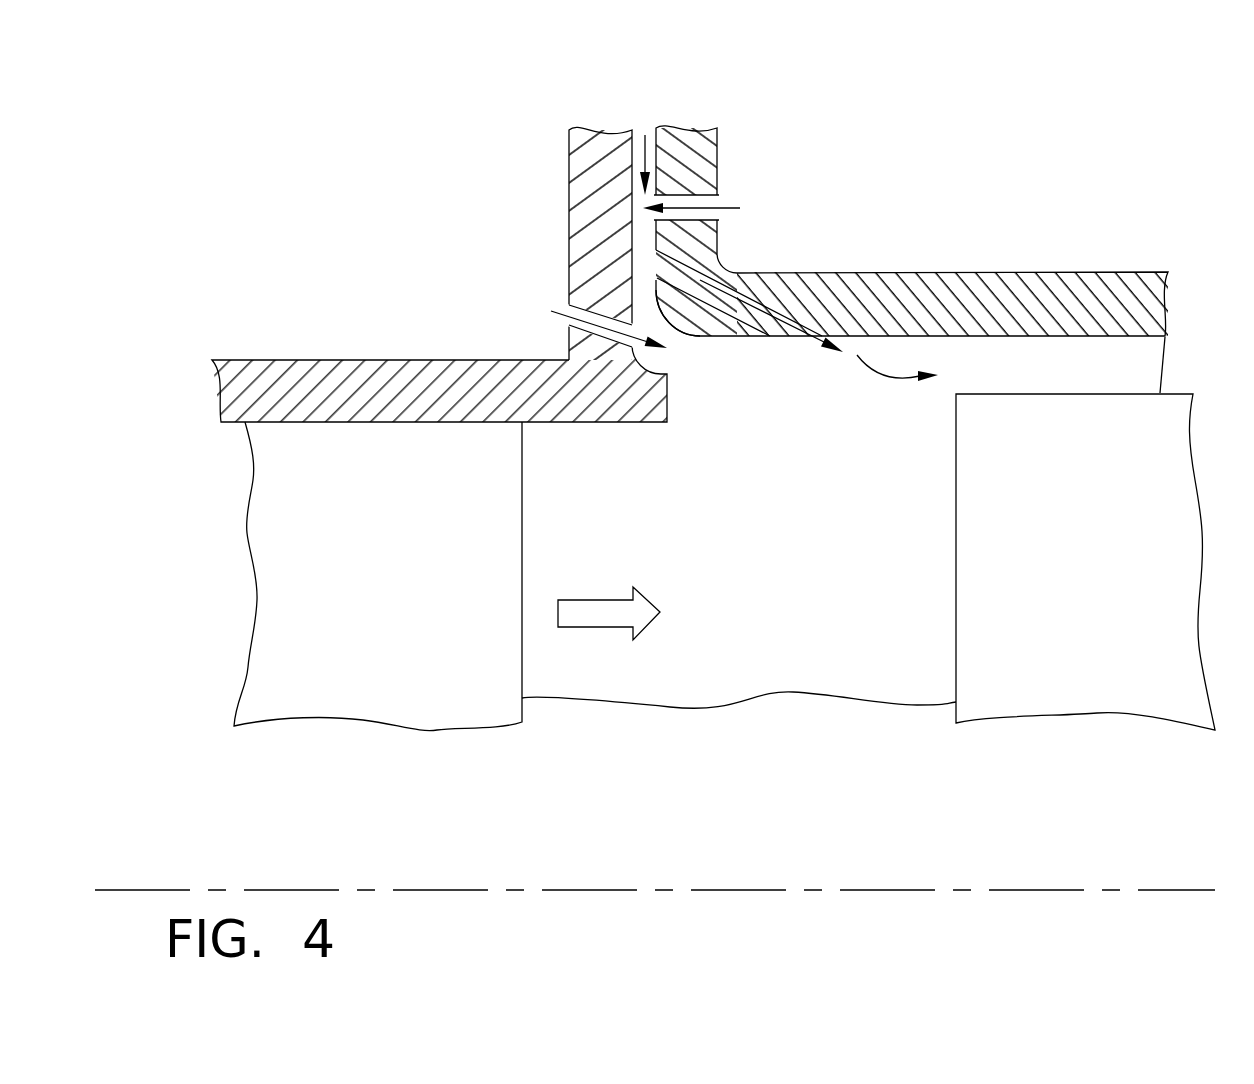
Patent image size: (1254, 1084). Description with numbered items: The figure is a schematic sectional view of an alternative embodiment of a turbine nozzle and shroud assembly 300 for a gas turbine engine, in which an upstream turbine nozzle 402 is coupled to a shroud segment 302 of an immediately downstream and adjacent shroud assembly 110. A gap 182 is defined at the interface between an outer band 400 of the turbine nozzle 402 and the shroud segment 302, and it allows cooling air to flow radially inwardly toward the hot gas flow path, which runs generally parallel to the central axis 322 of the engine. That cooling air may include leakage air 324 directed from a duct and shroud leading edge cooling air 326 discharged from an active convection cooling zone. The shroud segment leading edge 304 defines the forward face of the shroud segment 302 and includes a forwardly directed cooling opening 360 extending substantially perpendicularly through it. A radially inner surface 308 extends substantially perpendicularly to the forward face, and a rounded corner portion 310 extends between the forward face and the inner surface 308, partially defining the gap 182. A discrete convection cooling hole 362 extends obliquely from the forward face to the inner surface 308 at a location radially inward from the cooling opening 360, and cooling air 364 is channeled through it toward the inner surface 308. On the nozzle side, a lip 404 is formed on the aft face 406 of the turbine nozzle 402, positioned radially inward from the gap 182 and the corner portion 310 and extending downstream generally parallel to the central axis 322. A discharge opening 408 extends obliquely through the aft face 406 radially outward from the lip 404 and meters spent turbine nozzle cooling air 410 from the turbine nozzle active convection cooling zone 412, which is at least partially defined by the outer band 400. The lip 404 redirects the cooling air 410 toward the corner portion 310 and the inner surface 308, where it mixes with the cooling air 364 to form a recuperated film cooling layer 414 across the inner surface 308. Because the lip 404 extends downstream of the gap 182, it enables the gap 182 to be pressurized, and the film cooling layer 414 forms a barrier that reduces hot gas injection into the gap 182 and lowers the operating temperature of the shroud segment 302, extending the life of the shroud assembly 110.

The shroud assembly 110 is at (950, 134).
The gap 182 is at (640, 278).
The turbine nozzle and shroud assembly 300 is at (309, 131).
The shroud segment 302 is at (1043, 272).
The shroud segment leading edge 304 is at (657, 130).
The radially inner surface 308 is at (1085, 337).
The corner portion 310 is at (675, 327).
The central axis 322 is at (1050, 890).
The leakage air 324 is at (647, 152).
The shroud leading edge cooling air 326 is at (728, 210).
The cooling opening 360 is at (718, 198).
The convection cooling hole 362 is at (656, 250).
The cooling air 364 is at (780, 317).
The outer band 400 is at (379, 398).
The turbine nozzle 402 is at (312, 234).
The lip 404 is at (653, 395).
The aft face 406 is at (638, 133).
The discharge opening 408 is at (570, 325).
The spent turbine nozzle cooling air 410 is at (551, 311).
The turbine nozzle active convection cooling zone 412 is at (378, 323).
The film cooling layer 414 is at (884, 373).